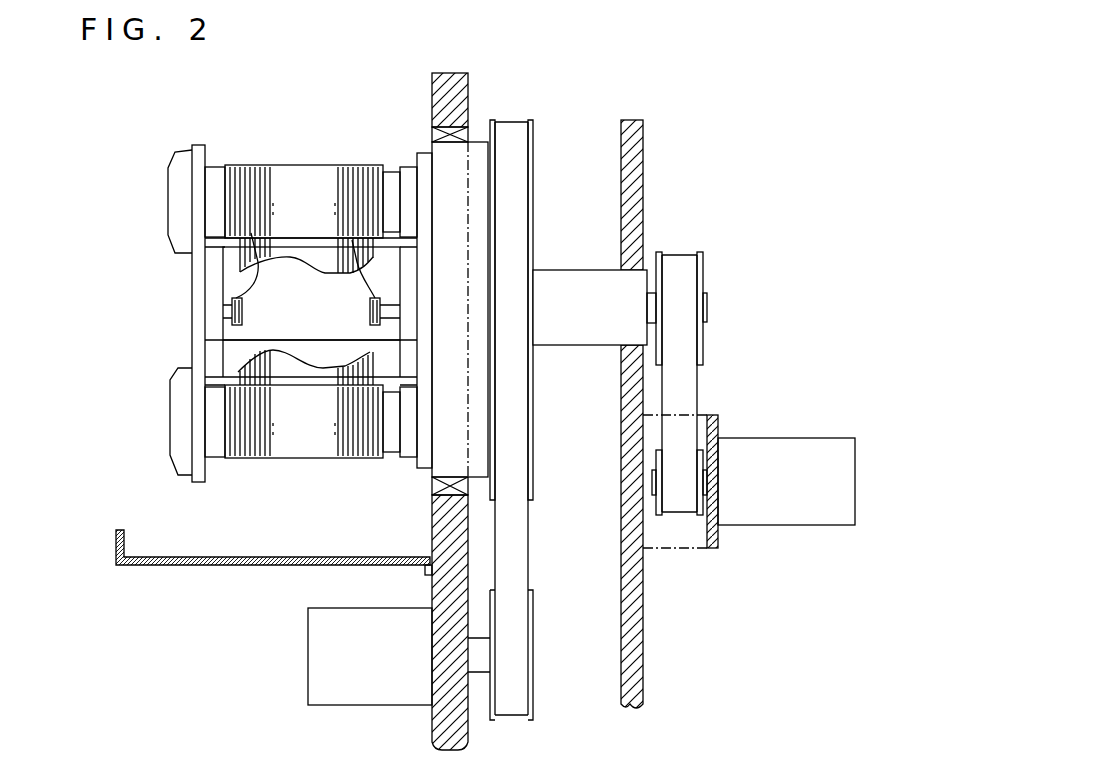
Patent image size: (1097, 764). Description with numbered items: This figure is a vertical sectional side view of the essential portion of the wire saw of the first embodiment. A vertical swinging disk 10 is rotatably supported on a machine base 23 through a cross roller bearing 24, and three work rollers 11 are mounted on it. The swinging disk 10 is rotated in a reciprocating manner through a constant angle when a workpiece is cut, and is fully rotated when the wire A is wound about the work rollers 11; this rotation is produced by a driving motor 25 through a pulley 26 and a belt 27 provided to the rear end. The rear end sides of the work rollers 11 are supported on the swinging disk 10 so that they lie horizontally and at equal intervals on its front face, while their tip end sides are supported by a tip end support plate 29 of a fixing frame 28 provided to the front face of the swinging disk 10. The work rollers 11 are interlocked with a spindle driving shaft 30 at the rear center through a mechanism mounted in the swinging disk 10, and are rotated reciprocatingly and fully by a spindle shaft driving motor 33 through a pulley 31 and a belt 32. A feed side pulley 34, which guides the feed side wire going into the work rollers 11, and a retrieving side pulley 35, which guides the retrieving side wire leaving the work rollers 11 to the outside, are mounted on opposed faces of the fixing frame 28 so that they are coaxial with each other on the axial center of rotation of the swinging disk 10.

The vertical swinging disk 10 is at (452, 175).
The work rollers 11 is at (303, 185).
The machine base 23 is at (440, 98).
The cross roller bearing 24 is at (437, 140).
The driving motor 25 is at (328, 662).
The pulley 26 is at (530, 142).
The belt 27 is at (520, 550).
The fixing frame 28 is at (215, 337).
The tip end support plate 29 is at (198, 288).
The spindle driving shaft 30 is at (575, 290).
The pulley 31 is at (700, 273).
The belt 32 is at (680, 390).
The spindle shaft driving motor 33 is at (800, 510).
The feed side pulley 34 is at (377, 298).
The retrieving side pulley 35 is at (250, 232).
The wire A is at (240, 413).